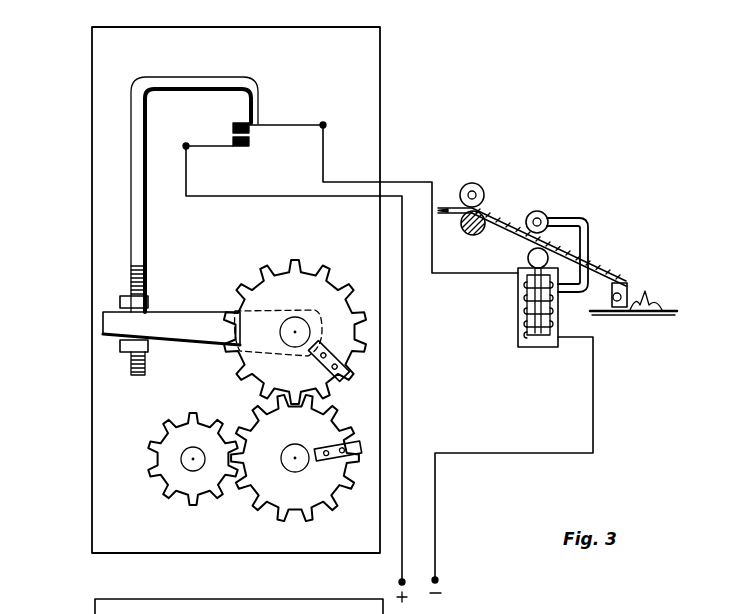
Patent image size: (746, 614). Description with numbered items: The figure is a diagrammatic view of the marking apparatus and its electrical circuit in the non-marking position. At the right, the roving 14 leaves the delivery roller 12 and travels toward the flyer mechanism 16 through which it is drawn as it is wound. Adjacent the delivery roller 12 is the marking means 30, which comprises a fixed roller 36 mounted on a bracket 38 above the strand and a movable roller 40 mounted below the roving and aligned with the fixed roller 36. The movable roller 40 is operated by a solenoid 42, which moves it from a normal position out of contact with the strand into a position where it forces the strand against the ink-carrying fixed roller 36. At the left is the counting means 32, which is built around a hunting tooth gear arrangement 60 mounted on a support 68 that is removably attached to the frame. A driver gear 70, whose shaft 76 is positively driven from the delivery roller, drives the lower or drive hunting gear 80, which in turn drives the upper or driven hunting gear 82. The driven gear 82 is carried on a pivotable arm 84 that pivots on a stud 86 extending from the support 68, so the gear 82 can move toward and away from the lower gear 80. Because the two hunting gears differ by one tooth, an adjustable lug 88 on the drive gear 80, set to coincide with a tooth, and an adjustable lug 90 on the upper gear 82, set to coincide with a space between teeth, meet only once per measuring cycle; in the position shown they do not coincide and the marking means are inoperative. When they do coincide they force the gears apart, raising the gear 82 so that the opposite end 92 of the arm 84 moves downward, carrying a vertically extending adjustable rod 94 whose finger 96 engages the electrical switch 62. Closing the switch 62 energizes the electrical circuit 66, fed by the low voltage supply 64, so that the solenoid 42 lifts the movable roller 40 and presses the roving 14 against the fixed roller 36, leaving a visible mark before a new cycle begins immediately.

The delivery rollers 12 is at (478, 236).
The roving 14 is at (485, 208).
The flyer mechanism 16 is at (650, 301).
The marking means 30 is at (606, 222).
The counting means 32 is at (88, 391).
The fixed roller 36 is at (542, 212).
The bracket 38 is at (584, 218).
The movable roller 40 is at (527, 261).
The solenoid 42 is at (517, 312).
The hunting tooth gear arrangement 60 is at (340, 403).
The electrical switch 62 is at (250, 139).
The low voltage supply 64 is at (419, 591).
The electrical circuit 66 is at (512, 452).
The support 68 is at (363, 98).
The driver gear 70 is at (188, 500).
The shaft 76 is at (198, 451).
The drive hunting gear 80 is at (328, 498).
The driven hunting gear 82 is at (322, 268).
The pivotable arm 84 is at (192, 312).
The stud 86 is at (258, 312).
The adjustable lug 88 is at (323, 444).
The adjustable lug 90 is at (333, 345).
The opposite end of the arm 92 is at (148, 340).
The adjustable rod 94 is at (145, 236).
The finger 96 is at (260, 109).